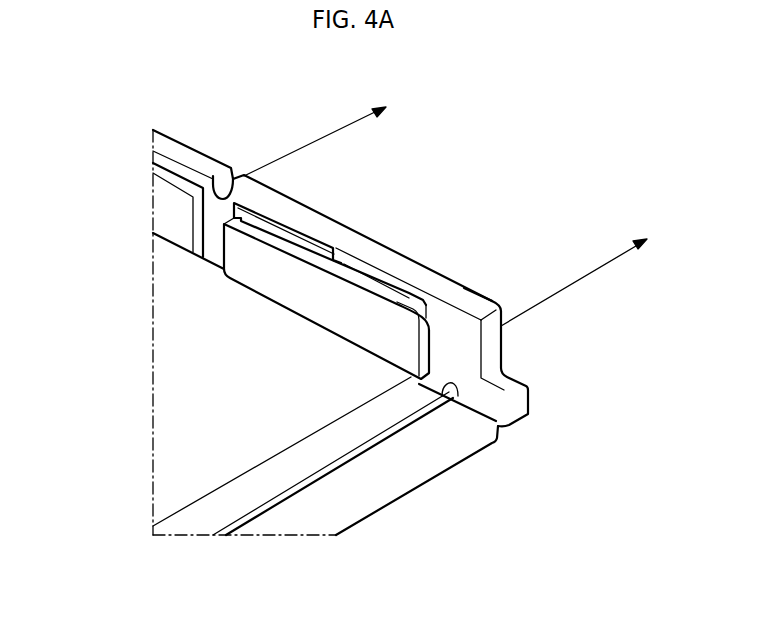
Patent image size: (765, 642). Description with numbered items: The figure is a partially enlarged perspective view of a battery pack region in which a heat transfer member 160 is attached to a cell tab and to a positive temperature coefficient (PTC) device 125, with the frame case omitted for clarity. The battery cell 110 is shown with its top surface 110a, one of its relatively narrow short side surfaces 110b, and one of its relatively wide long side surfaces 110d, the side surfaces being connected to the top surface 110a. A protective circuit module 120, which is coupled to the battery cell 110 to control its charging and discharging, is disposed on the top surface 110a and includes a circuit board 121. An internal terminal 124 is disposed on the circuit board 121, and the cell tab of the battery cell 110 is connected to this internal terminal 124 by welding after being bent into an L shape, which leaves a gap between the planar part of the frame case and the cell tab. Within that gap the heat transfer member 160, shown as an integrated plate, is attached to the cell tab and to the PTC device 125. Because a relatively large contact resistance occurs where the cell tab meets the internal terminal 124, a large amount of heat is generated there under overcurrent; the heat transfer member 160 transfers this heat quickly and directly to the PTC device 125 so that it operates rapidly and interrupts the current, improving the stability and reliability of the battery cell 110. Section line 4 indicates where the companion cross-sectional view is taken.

The section line 4- 4 is at (452, 207).
The battery cell 110 is at (150, 354).
The top surface 110a is at (165, 236).
The short side surface 110b is at (395, 475).
The long side surface 110d is at (173, 439).
The protective circuit module 120 is at (518, 331).
The circuit board 121 is at (455, 290).
The internal terminal 124 is at (297, 237).
The positive temperature coefficient (PTC) device 125 is at (377, 281).
The heat transfer member 160 is at (249, 247).